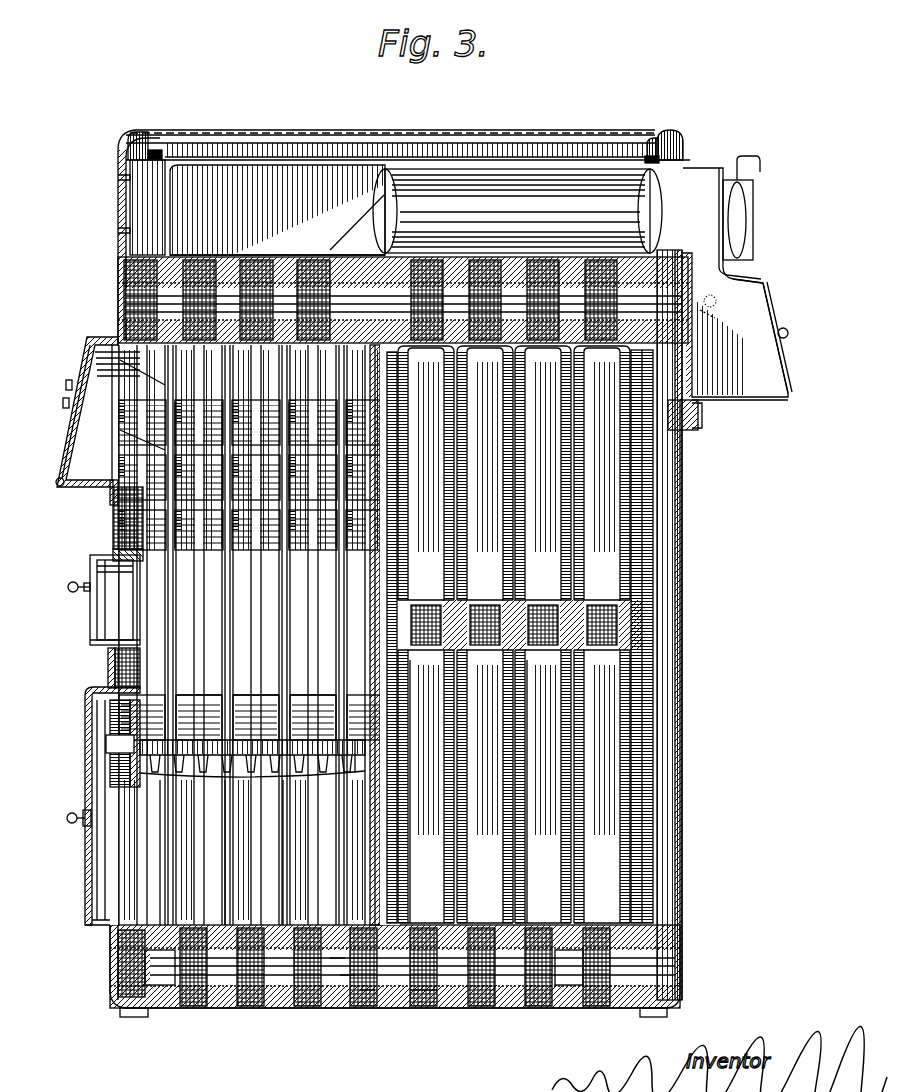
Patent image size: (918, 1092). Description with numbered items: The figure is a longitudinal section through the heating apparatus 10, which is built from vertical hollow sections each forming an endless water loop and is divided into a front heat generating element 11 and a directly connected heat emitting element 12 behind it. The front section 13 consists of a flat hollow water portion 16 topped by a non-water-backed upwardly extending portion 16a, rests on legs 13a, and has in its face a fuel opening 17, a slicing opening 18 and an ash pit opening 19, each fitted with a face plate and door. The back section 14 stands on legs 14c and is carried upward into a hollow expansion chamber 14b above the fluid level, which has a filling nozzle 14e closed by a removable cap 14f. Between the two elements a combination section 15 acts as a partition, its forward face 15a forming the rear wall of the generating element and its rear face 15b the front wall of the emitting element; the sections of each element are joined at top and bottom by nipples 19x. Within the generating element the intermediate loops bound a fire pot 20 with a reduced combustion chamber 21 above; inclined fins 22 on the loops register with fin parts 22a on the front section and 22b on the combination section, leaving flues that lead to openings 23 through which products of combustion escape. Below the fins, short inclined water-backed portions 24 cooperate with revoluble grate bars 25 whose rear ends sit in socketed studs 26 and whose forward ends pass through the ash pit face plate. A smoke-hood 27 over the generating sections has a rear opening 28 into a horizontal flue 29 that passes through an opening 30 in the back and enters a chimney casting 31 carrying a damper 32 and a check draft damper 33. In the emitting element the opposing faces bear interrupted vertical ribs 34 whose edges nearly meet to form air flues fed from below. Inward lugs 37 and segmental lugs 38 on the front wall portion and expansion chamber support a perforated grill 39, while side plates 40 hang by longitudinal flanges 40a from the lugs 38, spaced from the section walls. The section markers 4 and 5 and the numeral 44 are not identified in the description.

The apparatus 10 is at (395, 550).
The heat generating element 11 is at (378, 1075).
The heat emitting element 12 is at (672, 1052).
The front section 13 is at (118, 265).
The legs 13a is at (125, 1018).
The back section 14 is at (683, 517).
The hollow chamber 14b is at (675, 133).
The legs 14c is at (668, 1014).
The filling nozzle 14e is at (714, 312).
The removable cap 14f is at (716, 300).
The combination intermediate section 15 is at (367, 1010).
The forward face 15a is at (335, 962).
The rear face 15b is at (418, 1010).
The water portion 16 is at (113, 518).
The upwardly extending portion 16a is at (118, 214).
The fuel opening 17 is at (92, 340).
The slicing opening 18 is at (118, 590).
The ash pit opening 19 is at (110, 764).
The nipples 19x is at (165, 972).
The fire pot 20 is at (110, 670).
The combustion chamber 21 is at (110, 505).
The fins 22 is at (187, 545).
The fin parts 22a is at (357, 545).
The fin parts 22b is at (113, 547).
The openings 23 is at (166, 450).
The water-backed portions 24 is at (192, 700).
The grate bars 25 is at (200, 775).
The socketed studs 26 is at (356, 774).
The smoke-hood 27 is at (326, 214).
The opening 28 is at (362, 212).
The flue 29 is at (517, 211).
The opening 30 is at (692, 163).
The casting 31 is at (752, 282).
The damper 32 is at (755, 222).
The check draft damper 33 is at (789, 366).
The ribs or fins 34 is at (640, 560).
The lugs 37 is at (138, 133).
The segmental projections 38 is at (118, 153).
The perforated plate 39 is at (262, 133).
The side plates 40 is at (151, 207).
The longitudinal flanges 40a is at (455, 145).
The bottom guide 44 is at (347, 978).
The section line 4 is at (118, 160).
The section line 5 is at (175, 128).